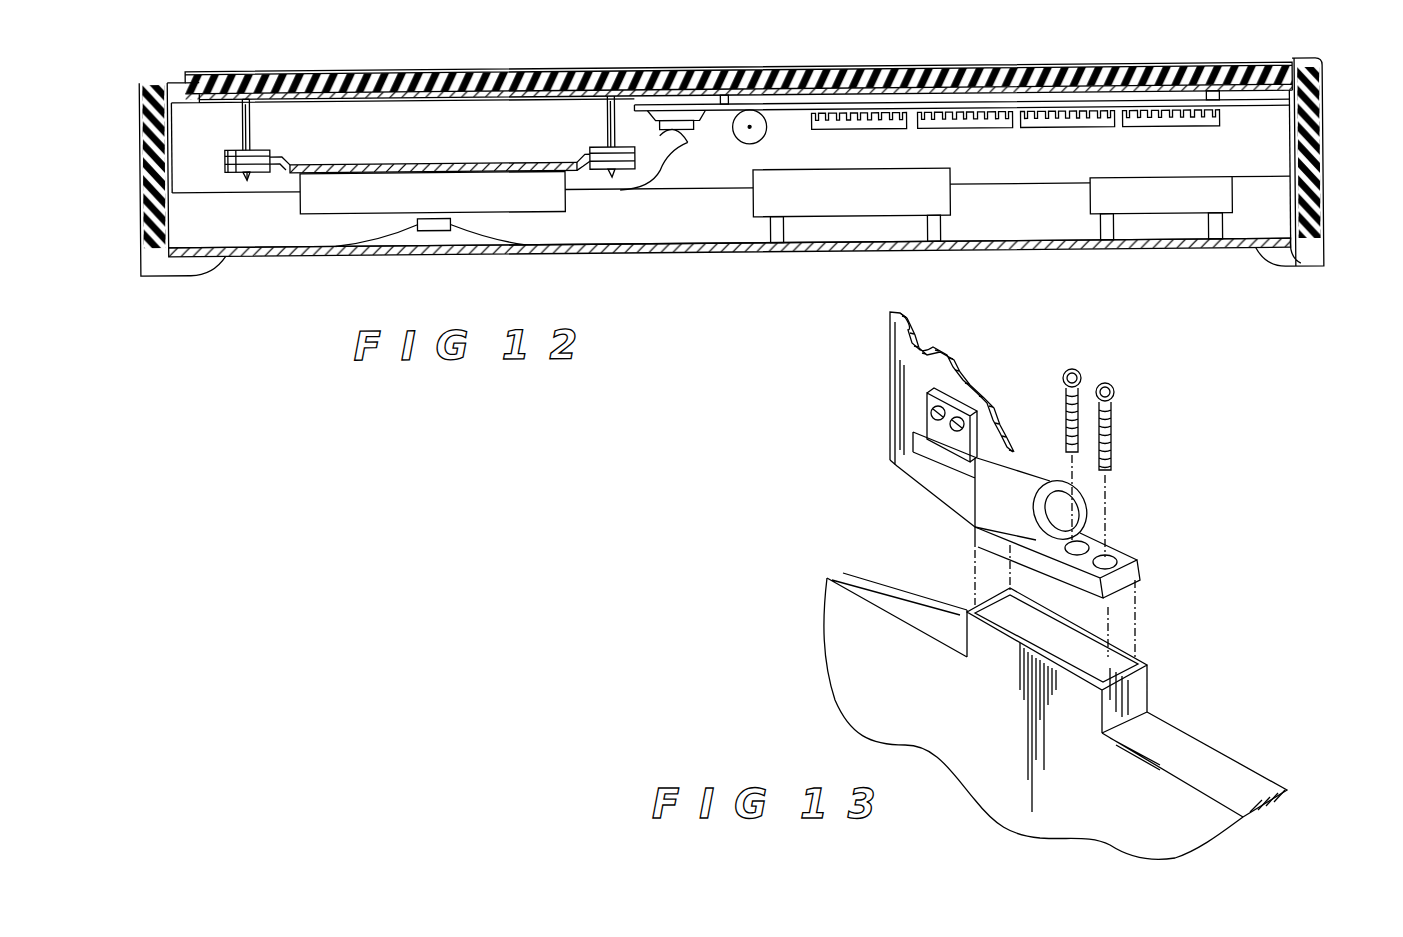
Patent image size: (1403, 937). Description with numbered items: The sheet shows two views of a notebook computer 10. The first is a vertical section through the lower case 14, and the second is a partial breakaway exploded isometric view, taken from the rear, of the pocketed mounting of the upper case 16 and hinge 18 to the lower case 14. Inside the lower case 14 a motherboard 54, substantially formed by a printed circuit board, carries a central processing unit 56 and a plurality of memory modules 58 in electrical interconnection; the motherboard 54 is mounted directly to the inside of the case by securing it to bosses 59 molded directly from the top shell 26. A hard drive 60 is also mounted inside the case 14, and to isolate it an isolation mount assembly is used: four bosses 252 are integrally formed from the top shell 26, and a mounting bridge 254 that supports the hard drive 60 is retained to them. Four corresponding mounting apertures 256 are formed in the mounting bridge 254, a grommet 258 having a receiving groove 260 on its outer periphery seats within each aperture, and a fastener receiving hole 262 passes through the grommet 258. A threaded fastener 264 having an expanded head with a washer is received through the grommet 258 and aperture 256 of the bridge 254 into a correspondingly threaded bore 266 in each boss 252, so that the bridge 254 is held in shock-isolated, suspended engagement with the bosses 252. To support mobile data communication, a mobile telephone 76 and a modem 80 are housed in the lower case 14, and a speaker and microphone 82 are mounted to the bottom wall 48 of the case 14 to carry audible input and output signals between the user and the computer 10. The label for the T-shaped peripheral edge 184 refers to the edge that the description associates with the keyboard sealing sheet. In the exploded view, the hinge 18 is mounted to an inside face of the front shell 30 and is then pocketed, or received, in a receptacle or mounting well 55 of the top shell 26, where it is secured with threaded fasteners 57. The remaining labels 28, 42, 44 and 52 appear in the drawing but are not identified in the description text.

In FIG. 12, the notebook computer 10 is at (912, 40).
In FIG. 12, the lower case 14 is at (515, 50).
In FIG. 13, the lower case 14 is at (785, 640).
In FIG. 13, the upper case 16 is at (858, 437).
In FIG. 13, the hinge 18 is at (970, 520).
In FIG. 12, the top shell 26 is at (1025, 72).
In FIG. 13, the top shell 26 is at (862, 703).
In FIG. 12, the base plate 28 is at (960, 252).
In FIG. 13, the front shell 30 is at (905, 376).
In FIG. 12, the left side wall 42 is at (140, 150).
In FIG. 12, the right side wall 44 is at (1326, 140).
In FIG. 12, the bottom wall 48 is at (607, 248).
In FIG. 12, the frame 52 is at (1330, 165).
In FIG. 12, the motherboard 54 is at (797, 101).
In FIG. 13, the mounting well 55 is at (1135, 677).
In FIG. 12, the central processing unit 56 is at (683, 112).
In FIG. 13, the threaded fasteners 57 is at (1117, 396).
In FIG. 12, the memory modules 58 is at (1150, 130).
In FIG. 12, the bosses 59 is at (724, 112).
In FIG. 12, the hard drive 60 is at (432, 192).
In FIG. 12, the mobile telephone 76 is at (922, 205).
In FIG. 12, the modem 80 is at (1190, 208).
In FIG. 12, the speaker and microphone 82 is at (492, 235).
In FIG. 12, the T-shaped peripheral edge 184 is at (364, 69).
In FIG. 12, the bosses 252 is at (243, 111).
In FIG. 12, the mounting bridge 254 is at (400, 159).
In FIG. 12, the mounting apertures 256 is at (272, 151).
In FIG. 12, the grommet 258 is at (236, 168).
In FIG. 12, the receiving groove 260 is at (236, 156).
In FIG. 12, the fastener receiving hole 262 is at (251, 180).
In FIG. 12, the threaded fastener 264 is at (244, 176).
In FIG. 12, the threaded bore 266 is at (257, 124).